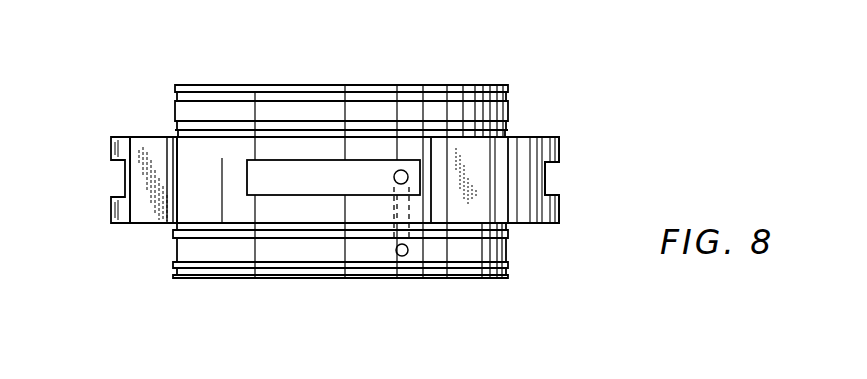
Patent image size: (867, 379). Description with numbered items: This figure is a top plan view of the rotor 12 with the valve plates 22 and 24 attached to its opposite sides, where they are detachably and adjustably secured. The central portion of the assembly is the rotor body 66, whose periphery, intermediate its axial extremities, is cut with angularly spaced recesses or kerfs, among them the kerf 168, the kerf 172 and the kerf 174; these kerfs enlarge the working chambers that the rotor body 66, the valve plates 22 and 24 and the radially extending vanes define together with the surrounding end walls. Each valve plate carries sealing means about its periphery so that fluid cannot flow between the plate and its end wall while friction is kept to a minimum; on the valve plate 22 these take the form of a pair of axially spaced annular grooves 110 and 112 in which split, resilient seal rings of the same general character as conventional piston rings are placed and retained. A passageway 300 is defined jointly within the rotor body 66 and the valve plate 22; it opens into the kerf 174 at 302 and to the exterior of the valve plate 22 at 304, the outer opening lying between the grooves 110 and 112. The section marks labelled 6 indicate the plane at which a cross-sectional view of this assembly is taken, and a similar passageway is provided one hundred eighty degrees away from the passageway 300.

The section line 6- 6 is at (100, 176).
The rotor 12 is at (147, 137).
The valve plate 22 is at (488, 252).
The valve plate 24 is at (478, 112).
The rotor body 66 is at (541, 148).
The annular groove 110 is at (290, 267).
The annular groove 112 is at (258, 233).
The kerf 168 is at (546, 184).
The kerf 172 is at (124, 187).
The kerf 174 is at (342, 170).
The passageway 300 is at (396, 195).
The passageway opening into kerf 302 is at (405, 183).
The passageway opening to valve plate exterior 304 is at (403, 256).